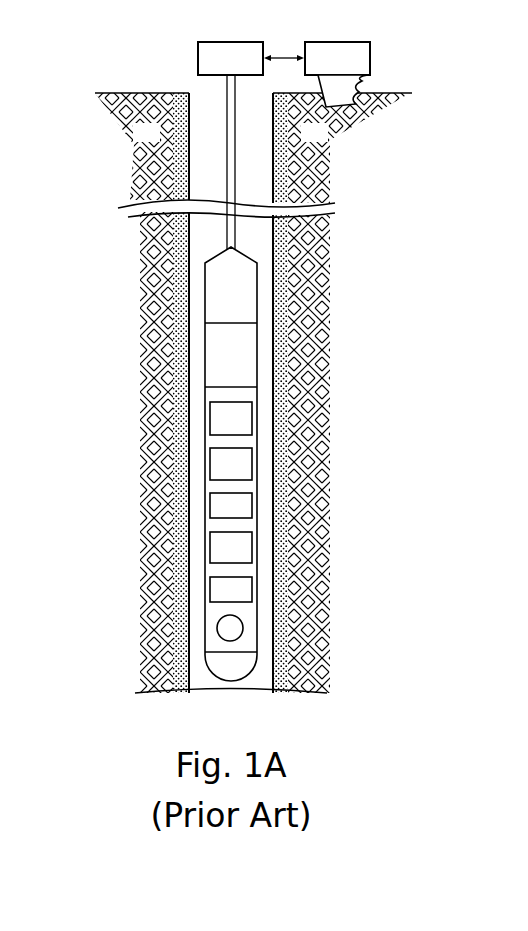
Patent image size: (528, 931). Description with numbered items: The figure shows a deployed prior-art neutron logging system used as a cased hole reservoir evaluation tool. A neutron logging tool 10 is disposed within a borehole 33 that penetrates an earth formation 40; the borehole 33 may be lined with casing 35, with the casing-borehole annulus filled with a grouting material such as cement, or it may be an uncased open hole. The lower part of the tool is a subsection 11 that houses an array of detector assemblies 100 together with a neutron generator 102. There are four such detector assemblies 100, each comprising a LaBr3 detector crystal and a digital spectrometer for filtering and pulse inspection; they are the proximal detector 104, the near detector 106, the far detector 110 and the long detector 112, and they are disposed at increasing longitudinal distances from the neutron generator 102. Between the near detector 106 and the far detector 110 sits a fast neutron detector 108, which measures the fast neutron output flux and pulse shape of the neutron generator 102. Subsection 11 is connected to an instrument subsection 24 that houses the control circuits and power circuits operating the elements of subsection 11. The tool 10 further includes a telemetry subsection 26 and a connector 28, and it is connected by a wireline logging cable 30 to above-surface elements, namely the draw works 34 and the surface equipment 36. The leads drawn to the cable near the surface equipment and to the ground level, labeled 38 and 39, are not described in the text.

The neutron logging tool 10 is at (200, 300).
The subsection 11 is at (204, 442).
The instrument subsection 24 is at (257, 355).
The telemetry subsection 26 is at (257, 293).
The connector 28 is at (213, 262).
The wireline logging cable 30 is at (237, 162).
The borehole 33 is at (187, 347).
The draw works 34 is at (238, 42).
The casing 35 is at (176, 373).
The surface equipment 36 is at (352, 42).
The surface cable 38 is at (367, 82).
The earth surface 39 is at (121, 92).
The earth formation 40 is at (157, 140).
The detector assemblies 100 is at (213, 518).
The neutron generator 102 is at (243, 628).
The proximal detector 104 is at (252, 590).
The near detector 106 is at (252, 548).
The fast neutron detector 108 is at (252, 507).
The far detector 110 is at (252, 465).
The long detector 112 is at (252, 418).